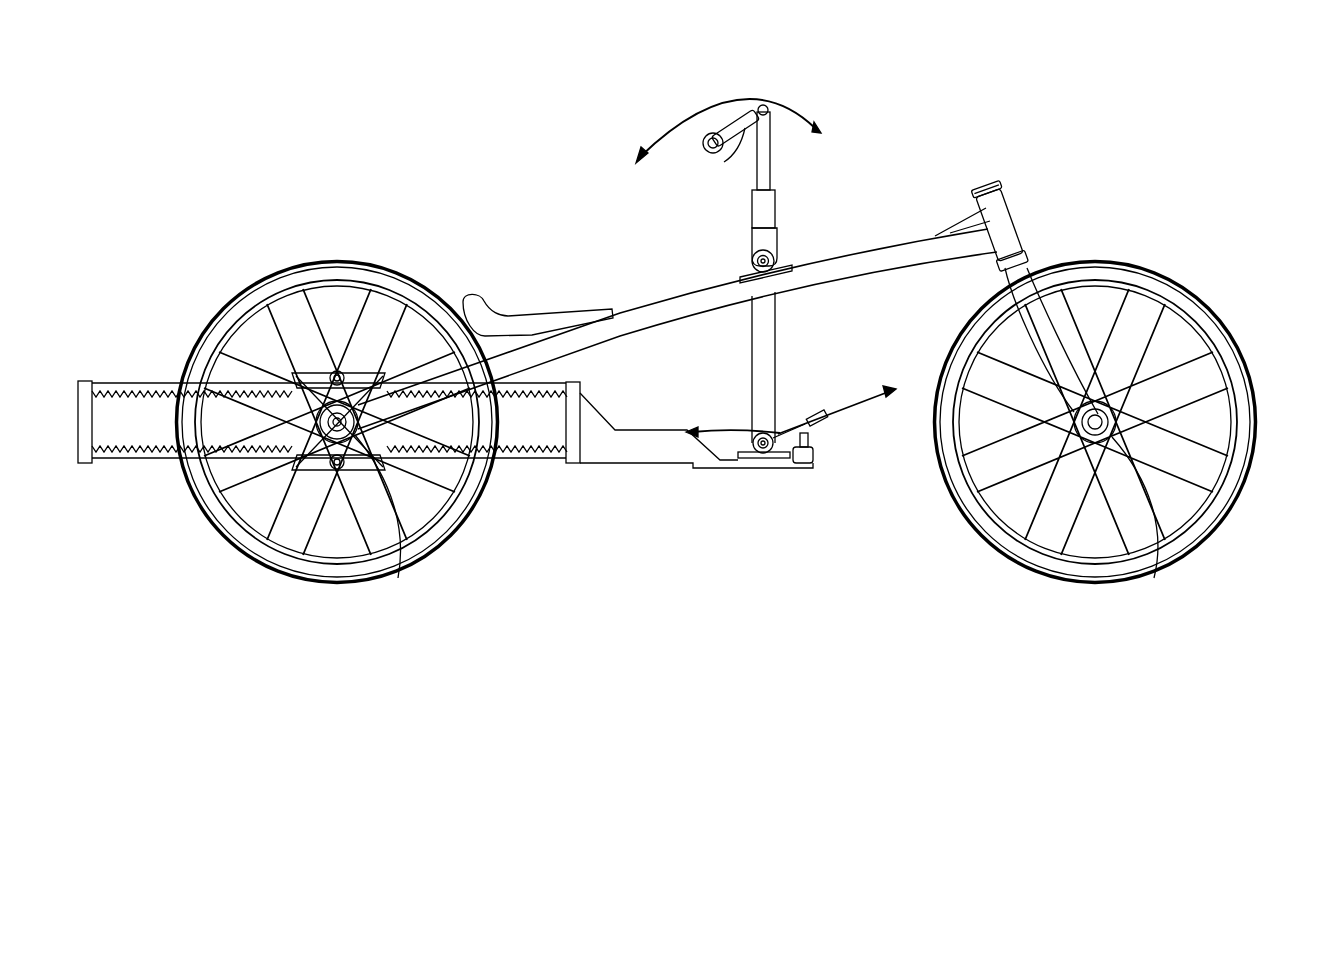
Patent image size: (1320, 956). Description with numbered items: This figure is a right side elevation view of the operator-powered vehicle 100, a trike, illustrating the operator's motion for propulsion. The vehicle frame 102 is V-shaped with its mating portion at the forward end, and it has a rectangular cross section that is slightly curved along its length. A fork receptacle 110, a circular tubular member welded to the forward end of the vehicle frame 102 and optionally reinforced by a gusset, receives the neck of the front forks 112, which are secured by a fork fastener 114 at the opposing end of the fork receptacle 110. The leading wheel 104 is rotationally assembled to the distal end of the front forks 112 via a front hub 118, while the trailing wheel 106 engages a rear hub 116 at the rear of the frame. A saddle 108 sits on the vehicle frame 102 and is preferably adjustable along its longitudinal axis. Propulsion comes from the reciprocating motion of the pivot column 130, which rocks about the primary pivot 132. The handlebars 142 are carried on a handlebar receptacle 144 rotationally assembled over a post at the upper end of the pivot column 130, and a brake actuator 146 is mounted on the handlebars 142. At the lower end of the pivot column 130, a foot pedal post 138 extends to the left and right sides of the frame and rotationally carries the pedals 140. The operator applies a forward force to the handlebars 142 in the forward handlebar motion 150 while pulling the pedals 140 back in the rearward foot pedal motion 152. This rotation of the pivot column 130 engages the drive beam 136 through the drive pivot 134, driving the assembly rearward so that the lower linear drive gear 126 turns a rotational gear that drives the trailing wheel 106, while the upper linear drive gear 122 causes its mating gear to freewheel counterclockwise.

The operator-powered vehicle 100 is at (337, 124).
The vehicle frame 102 is at (672, 318).
The leading wheel 104 is at (1028, 548).
The trailing wheel 106 is at (268, 548).
The saddle 108 is at (540, 322).
The fork receptacle 110 is at (1005, 225).
The front forks 112 is at (1035, 290).
The fork fastener 114 is at (990, 190).
The rear hub 116 is at (398, 572).
The front hub 118 is at (1152, 572).
The upper linear drive gear 122 is at (152, 392).
The lower linear drive gear 126 is at (150, 458).
The pivot column 130 is at (760, 345).
The primary pivot 132 is at (749, 262).
The drive pivot 134 is at (752, 452).
The drive beam 136 is at (642, 440).
The foot pedal post 138 is at (810, 464).
The pedals 140 is at (828, 418).
The handlebars 142 is at (765, 112).
The handlebar receptacle 144 is at (770, 210).
The brake actuator 146 is at (720, 158).
The forward handlebar motion 150 is at (666, 142).
The rearward foot pedal motion 152 is at (855, 412).